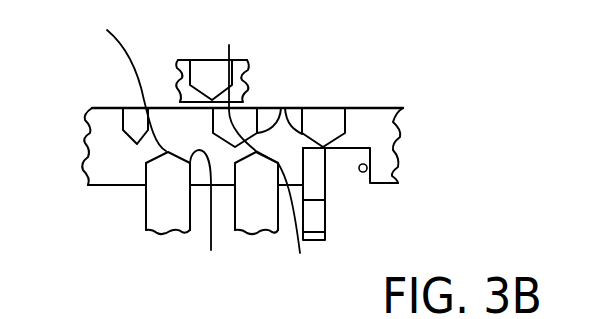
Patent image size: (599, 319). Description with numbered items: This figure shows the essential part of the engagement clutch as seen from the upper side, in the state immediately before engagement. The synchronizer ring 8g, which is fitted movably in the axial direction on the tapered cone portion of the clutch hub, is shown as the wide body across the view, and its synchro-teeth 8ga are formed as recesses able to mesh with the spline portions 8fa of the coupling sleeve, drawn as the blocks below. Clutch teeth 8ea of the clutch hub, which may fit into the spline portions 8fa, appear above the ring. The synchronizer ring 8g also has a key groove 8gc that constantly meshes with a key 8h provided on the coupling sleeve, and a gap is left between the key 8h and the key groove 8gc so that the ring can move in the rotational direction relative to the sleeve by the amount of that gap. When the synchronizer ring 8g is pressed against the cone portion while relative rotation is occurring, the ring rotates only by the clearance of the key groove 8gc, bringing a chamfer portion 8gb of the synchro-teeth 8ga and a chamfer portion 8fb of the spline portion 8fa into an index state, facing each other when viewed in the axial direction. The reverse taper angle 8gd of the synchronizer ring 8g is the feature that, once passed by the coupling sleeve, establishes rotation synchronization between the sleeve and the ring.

The synchronizer ring 8g is at (397, 110).
The synchro-teeth 8ga is at (139, 118).
The chamfer portion 8gb is at (148, 134).
The key groove 8gc is at (367, 166).
The reverse taper angle 8gd is at (213, 133).
The clutch teeth 8ea is at (213, 75).
The spline portion 8fa is at (162, 213).
The chamfer portion 8fb is at (205, 140).
The key 8h is at (313, 218).